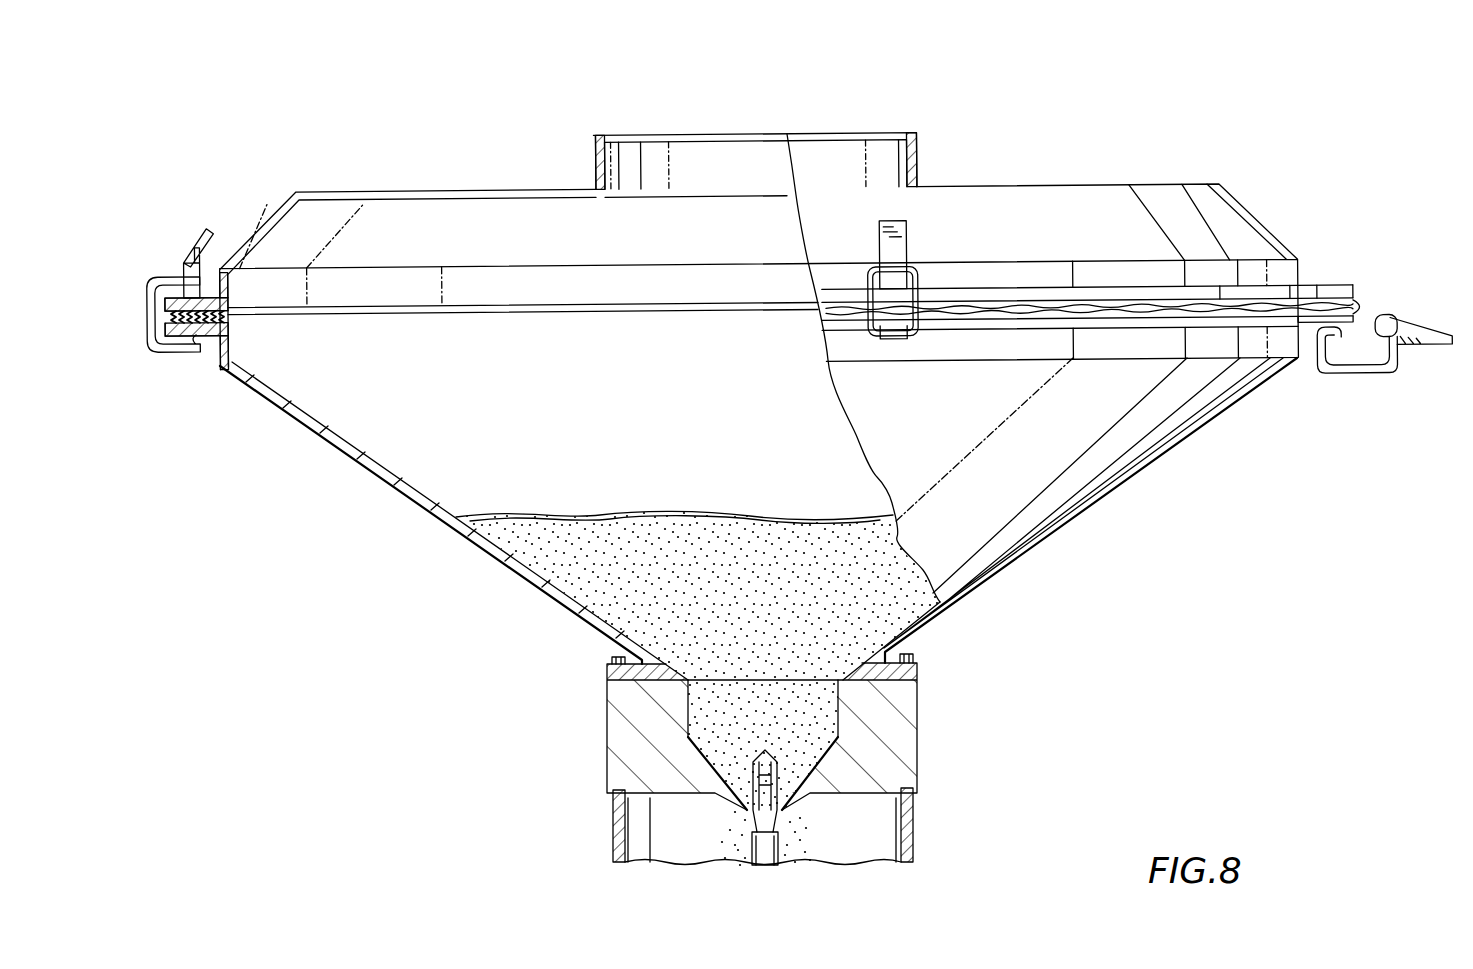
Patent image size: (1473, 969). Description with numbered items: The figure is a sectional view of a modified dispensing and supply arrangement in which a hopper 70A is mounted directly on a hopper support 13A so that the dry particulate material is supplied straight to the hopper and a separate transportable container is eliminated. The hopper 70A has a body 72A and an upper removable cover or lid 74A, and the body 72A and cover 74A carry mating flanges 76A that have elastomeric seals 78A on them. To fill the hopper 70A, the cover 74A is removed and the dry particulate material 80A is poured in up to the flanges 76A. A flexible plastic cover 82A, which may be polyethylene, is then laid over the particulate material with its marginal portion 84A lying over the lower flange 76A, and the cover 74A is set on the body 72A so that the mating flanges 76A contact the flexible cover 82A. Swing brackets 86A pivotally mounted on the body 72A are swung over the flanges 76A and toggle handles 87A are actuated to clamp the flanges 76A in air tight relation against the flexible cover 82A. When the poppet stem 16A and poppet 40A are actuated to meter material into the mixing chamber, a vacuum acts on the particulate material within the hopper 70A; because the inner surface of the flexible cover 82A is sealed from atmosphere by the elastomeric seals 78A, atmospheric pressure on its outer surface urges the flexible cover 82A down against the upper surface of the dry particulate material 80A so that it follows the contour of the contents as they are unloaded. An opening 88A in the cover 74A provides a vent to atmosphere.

The hopper support 13A is at (913, 702).
The poppet stem 16A is at (778, 826).
The poppet 40A is at (768, 773).
The hopper 70A is at (384, 479).
The body 72A is at (1132, 465).
The cover 74A is at (1228, 206).
The mating flanges 76A is at (172, 296).
The elastomeric seals 78A is at (230, 325).
The dry particulate material 80A is at (568, 568).
The flexible plastic cover 82A is at (300, 425).
The marginal portion 84A is at (168, 322).
The clamp 86A is at (152, 287).
The toggle handles 87A is at (196, 240).
The opening 88A is at (680, 134).